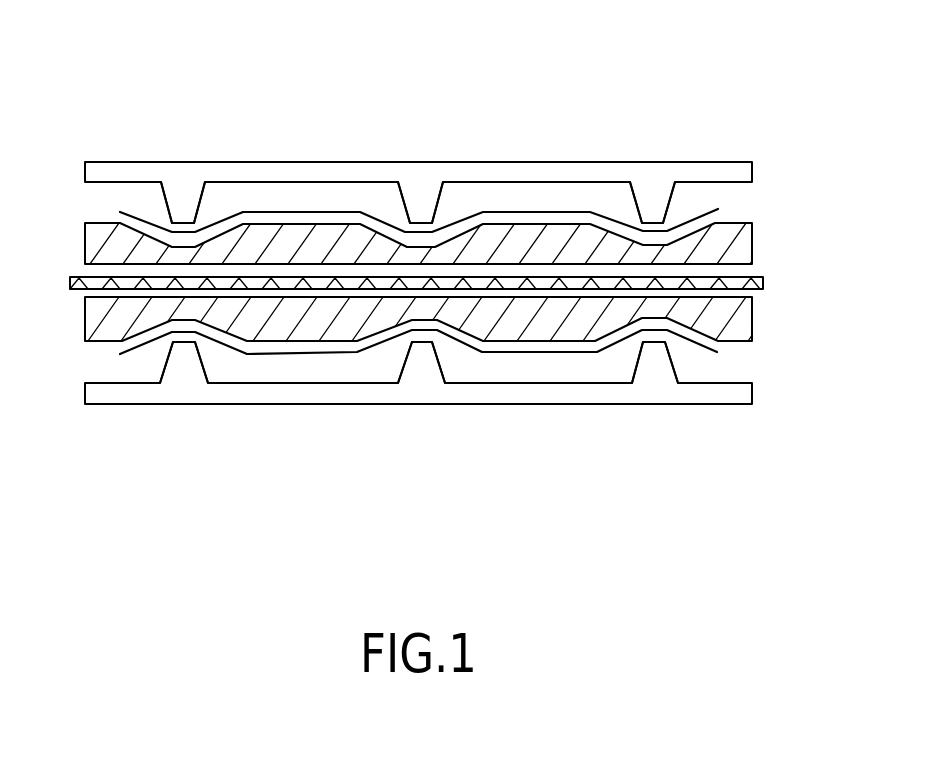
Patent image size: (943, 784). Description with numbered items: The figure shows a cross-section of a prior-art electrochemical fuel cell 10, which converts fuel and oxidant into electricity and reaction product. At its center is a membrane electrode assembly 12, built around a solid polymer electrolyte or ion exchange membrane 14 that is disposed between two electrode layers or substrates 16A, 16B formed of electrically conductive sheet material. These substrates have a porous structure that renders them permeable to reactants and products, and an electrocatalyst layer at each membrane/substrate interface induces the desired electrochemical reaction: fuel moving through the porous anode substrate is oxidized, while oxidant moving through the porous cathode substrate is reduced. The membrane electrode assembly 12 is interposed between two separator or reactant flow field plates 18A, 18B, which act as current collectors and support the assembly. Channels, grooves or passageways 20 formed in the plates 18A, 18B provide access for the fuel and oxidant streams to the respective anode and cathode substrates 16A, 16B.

The electrochemical fuel cell 10 is at (690, 110).
The membrane electrode assembly 12 is at (440, 284).
The ion exchange membrane 14 is at (763, 283).
The electrode substrate 16A is at (763, 207).
The electrode substrate 16B is at (763, 292).
The reactant flow field plate 18A is at (752, 170).
The reactant flow field plate 18B is at (752, 393).
The channels 20 is at (280, 195).